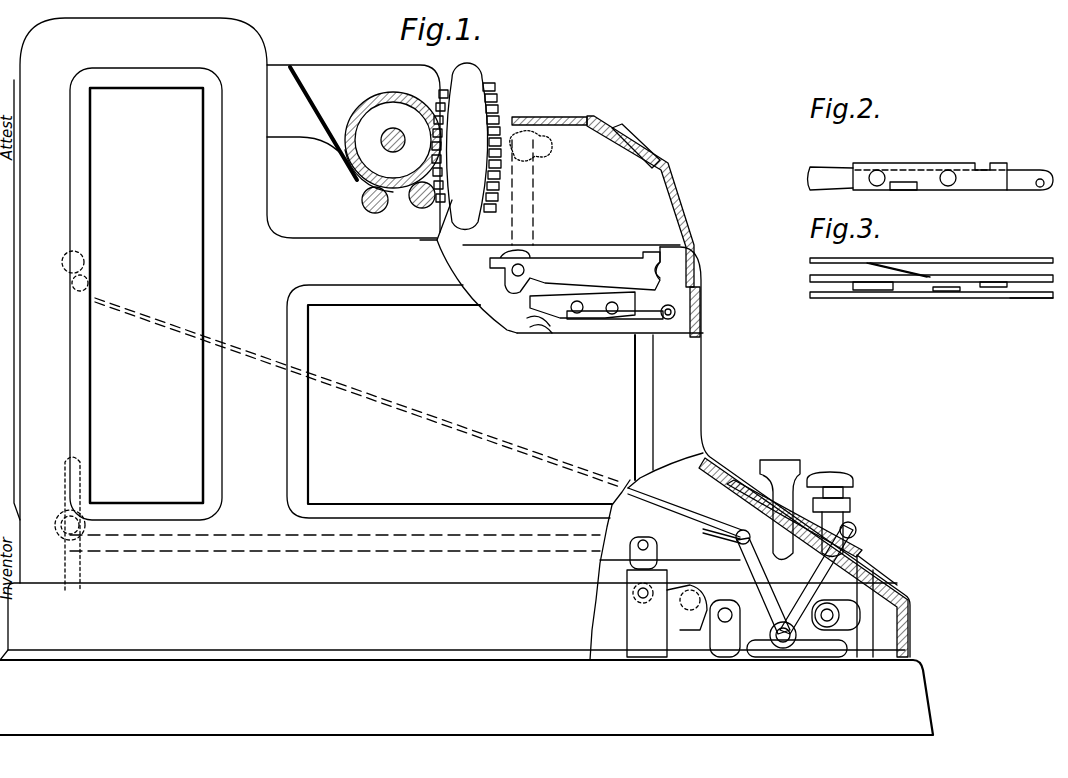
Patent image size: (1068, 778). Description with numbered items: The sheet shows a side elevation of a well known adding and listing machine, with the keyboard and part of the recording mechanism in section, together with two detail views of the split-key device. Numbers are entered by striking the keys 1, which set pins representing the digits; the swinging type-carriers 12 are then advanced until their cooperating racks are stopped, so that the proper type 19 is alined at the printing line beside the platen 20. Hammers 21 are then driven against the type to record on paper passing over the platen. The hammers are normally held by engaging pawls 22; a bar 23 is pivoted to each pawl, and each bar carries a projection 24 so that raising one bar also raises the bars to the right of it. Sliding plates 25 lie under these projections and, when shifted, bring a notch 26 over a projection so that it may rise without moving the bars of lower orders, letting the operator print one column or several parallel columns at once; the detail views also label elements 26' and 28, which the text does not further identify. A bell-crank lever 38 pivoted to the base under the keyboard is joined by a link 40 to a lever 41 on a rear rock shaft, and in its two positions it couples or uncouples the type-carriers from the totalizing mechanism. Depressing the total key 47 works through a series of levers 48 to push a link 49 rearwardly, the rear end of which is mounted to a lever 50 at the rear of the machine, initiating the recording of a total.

In FIG. 1, the keys 1 is at (782, 461).
In FIG. 1, the type-carriers 12 is at (466, 146).
In FIG. 1, the type 19 is at (503, 115).
In FIG. 1, the platen 20 is at (418, 101).
In FIG. 1, the hammers 21 is at (575, 271).
In FIG. 1, the pawls 22 is at (690, 283).
In FIG. 1, the bar 23 is at (532, 315).
In FIG. 2, the bar 23 is at (1030, 192).
In FIG. 3, the bar 23 is at (1031, 306).
In FIG. 1, the projection 24 is at (621, 321).
In FIG. 2, the projection 24 is at (894, 197).
In FIG. 3, the projection 24 is at (900, 268).
In FIG. 1, the sliding plate 25 is at (582, 299).
In FIG. 2, the notch 26 is at (887, 164).
In FIG. 3, the notch 26 is at (955, 265).
In FIG. 2, the pin 26' is at (949, 164).
In FIG. 3, the plate 28 is at (1000, 263).
In FIG. 1, the bell-crank lever 38 is at (828, 608).
In FIG. 1, the link 40 is at (745, 564).
In FIG. 1, the lever 41 is at (342, 369).
In FIG. 1, the total key 47 is at (830, 507).
In FIG. 1, the levers 48 is at (703, 621).
In FIG. 1, the link 49 is at (637, 590).
In FIG. 1, the lever 50 is at (59, 523).